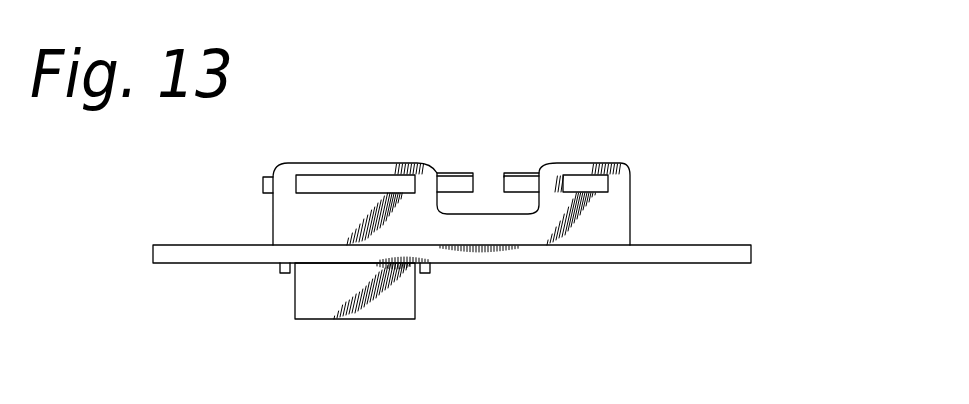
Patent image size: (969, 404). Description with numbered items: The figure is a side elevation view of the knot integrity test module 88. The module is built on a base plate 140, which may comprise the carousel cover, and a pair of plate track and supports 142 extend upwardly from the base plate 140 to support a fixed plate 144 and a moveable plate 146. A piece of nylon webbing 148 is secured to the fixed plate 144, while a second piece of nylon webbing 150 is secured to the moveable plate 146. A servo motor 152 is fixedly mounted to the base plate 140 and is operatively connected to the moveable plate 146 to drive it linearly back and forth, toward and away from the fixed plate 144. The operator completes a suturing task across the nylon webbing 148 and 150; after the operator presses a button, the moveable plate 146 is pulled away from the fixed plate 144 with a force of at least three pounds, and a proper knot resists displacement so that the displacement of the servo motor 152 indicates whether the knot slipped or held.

The knot integrity test module 88 is at (725, 196).
The base plate 140 is at (751, 244).
The plate track and supports 142 is at (617, 213).
The fixed plate 144 is at (528, 182).
The moveable plate 146 is at (262, 177).
The nylon webbing 148 is at (518, 172).
The second piece of nylon webbing 150 is at (442, 172).
The servo motor 152 is at (330, 307).